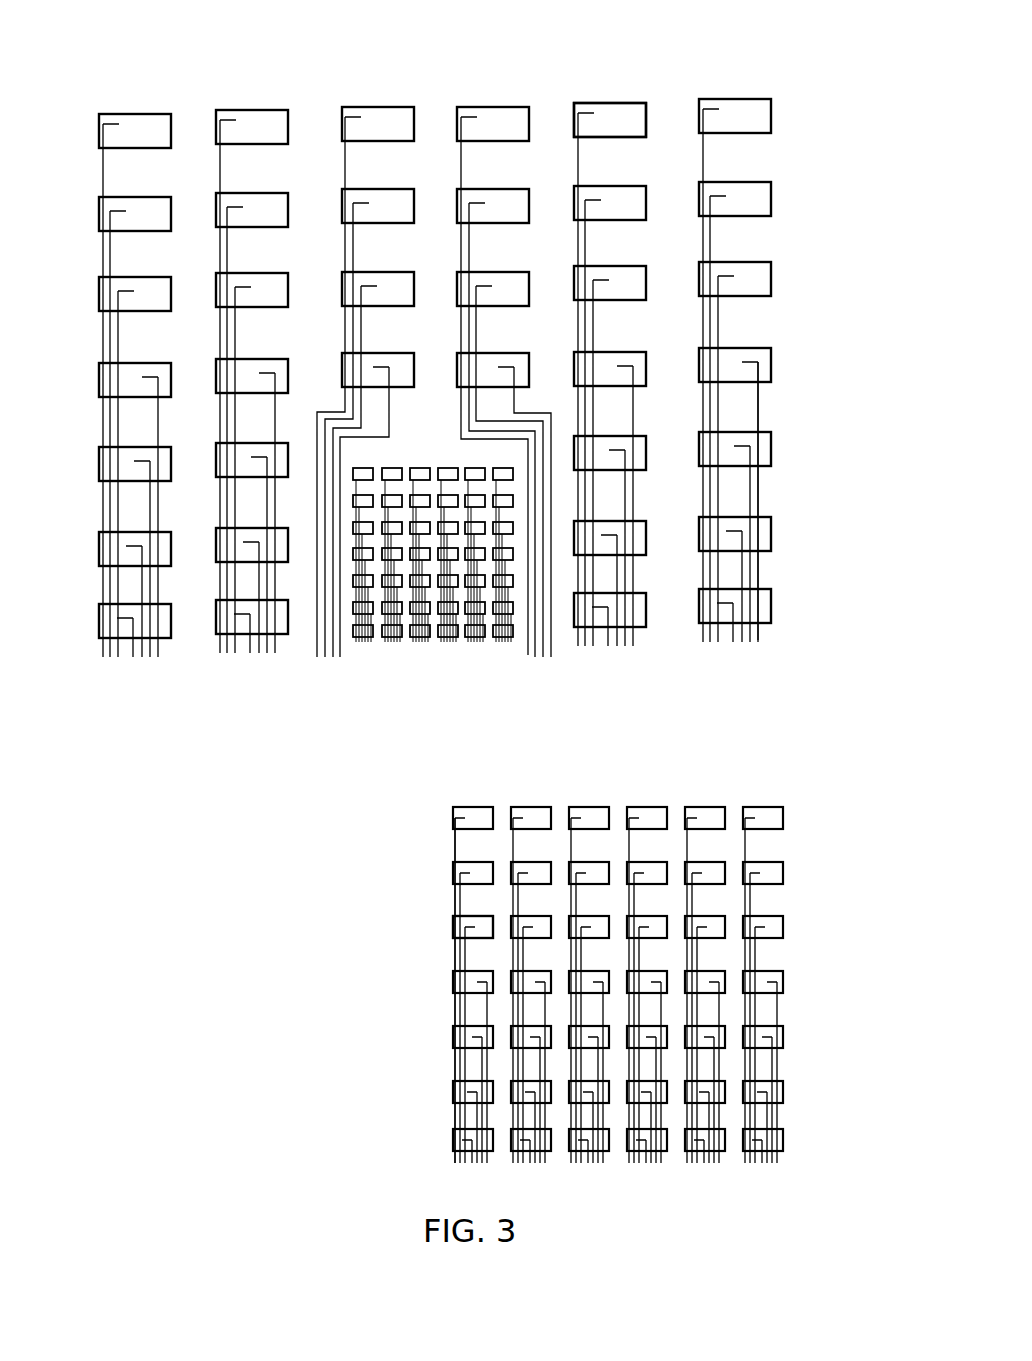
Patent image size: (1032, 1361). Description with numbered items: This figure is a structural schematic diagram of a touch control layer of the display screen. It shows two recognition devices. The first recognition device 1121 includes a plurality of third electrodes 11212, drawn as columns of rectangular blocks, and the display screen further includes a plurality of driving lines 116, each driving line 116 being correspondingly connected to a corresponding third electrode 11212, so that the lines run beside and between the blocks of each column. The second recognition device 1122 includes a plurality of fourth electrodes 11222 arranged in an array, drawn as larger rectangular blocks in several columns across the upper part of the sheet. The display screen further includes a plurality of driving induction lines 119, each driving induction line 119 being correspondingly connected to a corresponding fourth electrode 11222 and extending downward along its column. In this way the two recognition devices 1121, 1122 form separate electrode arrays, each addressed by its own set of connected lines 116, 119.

The second recognition device 1122 is at (467, 77).
The fourth electrode 11222 is at (623, 118).
The driving induction line 119 is at (760, 498).
The first recognition device 1121 is at (528, 775).
The third electrode 11212 is at (480, 925).
The driving line 116 is at (457, 1060).